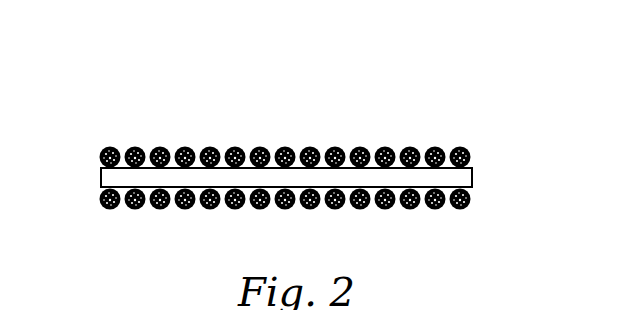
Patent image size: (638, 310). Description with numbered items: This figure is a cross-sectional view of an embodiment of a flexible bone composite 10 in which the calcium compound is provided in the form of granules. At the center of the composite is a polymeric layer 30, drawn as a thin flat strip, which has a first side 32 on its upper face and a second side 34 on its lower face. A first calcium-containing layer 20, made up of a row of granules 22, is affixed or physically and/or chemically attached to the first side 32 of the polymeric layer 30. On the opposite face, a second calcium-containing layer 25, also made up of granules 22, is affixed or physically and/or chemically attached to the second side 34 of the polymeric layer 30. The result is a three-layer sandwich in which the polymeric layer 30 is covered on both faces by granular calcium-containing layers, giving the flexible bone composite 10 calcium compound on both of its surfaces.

The flexible bone composite 10 is at (143, 58).
The first calcium-containing layer 20 is at (473, 153).
The granules 22 is at (362, 143).
The second calcium-containing layer 25 is at (474, 197).
The polymeric layer 30 is at (474, 177).
The first side 32 is at (100, 157).
The second side 34 is at (100, 200).